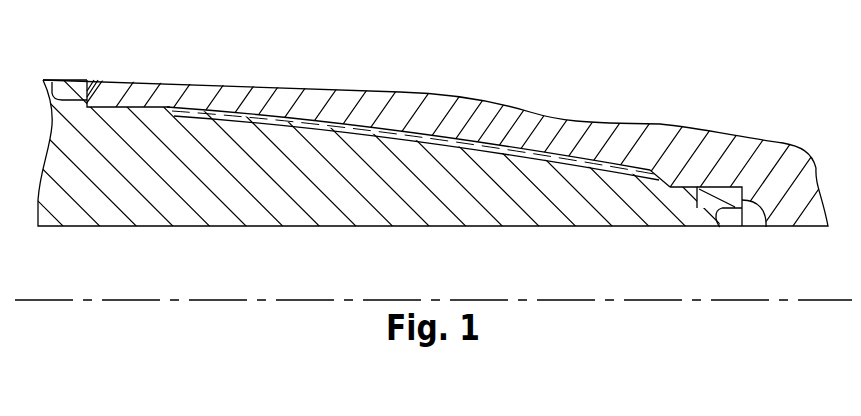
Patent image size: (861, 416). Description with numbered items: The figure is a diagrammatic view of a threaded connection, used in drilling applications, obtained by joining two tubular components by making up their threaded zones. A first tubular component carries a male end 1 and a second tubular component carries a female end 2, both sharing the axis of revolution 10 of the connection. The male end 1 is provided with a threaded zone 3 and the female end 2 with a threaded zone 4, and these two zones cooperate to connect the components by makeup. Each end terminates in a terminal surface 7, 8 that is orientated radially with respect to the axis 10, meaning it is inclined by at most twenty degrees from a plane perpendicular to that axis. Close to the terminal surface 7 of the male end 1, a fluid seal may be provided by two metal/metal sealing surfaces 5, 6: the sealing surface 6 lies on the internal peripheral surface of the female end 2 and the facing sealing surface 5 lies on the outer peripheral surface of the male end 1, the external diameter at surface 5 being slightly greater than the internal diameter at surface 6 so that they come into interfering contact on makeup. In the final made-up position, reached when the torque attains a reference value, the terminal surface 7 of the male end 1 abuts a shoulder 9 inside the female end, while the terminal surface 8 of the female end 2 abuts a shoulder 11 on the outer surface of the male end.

The male end 1 is at (133, 182).
The female end 2 is at (122, 90).
The threaded zone 3 is at (257, 120).
The threaded zone 4 is at (306, 110).
The sealing surface 5 is at (697, 197).
The sealing surface 6 is at (724, 185).
The terminal surface 7 is at (766, 228).
The terminal surface 8 is at (52, 79).
The shoulder 9 is at (720, 228).
The axis of revolution 10 is at (739, 302).
The shoulder 11 is at (108, 80).